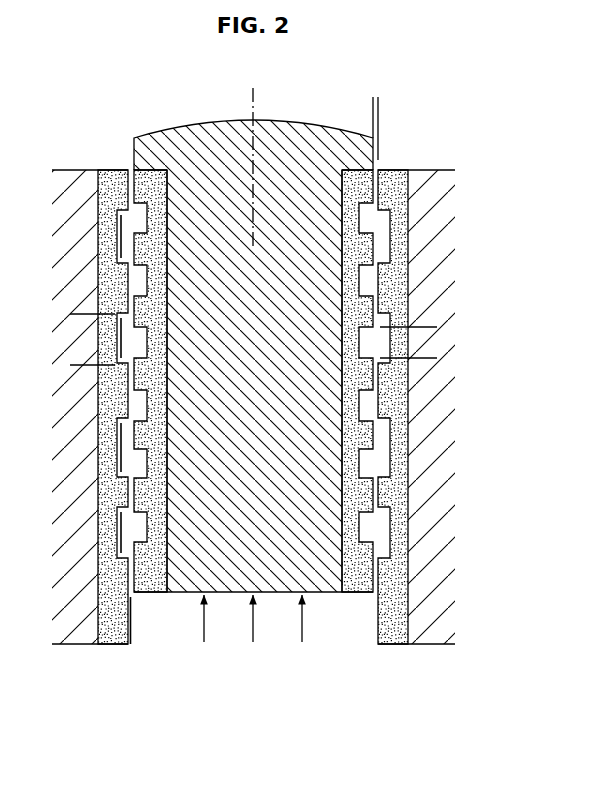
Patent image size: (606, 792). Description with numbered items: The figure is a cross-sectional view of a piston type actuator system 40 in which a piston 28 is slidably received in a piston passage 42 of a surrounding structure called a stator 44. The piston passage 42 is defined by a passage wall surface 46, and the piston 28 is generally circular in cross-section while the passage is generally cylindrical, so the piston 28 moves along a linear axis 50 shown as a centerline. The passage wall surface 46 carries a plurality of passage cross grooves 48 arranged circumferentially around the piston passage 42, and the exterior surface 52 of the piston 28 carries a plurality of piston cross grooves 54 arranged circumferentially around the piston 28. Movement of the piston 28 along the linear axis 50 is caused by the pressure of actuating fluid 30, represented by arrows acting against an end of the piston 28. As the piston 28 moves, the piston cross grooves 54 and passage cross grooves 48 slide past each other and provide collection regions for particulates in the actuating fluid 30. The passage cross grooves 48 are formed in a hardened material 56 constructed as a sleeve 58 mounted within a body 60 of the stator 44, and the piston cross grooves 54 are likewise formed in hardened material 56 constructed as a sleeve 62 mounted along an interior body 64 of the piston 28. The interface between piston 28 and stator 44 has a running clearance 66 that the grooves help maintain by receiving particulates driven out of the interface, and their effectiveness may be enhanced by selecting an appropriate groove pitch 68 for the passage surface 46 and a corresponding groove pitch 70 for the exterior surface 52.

The piston 28 is at (205, 124).
The actuating fluid 30 is at (253, 628).
The actuator system 40 is at (93, 134).
The piston passage 42 is at (165, 645).
The stator 44 is at (432, 158).
The passage wall surface 46 is at (126, 412).
The passage cross grooves 48 is at (118, 457).
The linear axis 50 is at (254, 103).
The exterior surface 52 is at (362, 462).
The piston cross grooves 54 is at (367, 284).
The hardened material 56 is at (112, 288).
The sleeve 58 is at (110, 216).
The body 60 is at (424, 552).
The sleeve 62 is at (402, 436).
The interior body 64 is at (241, 367).
The running clearance 66 is at (350, 105).
The groove pitch 68 is at (77, 316).
The groove pitch 70 is at (431, 329).